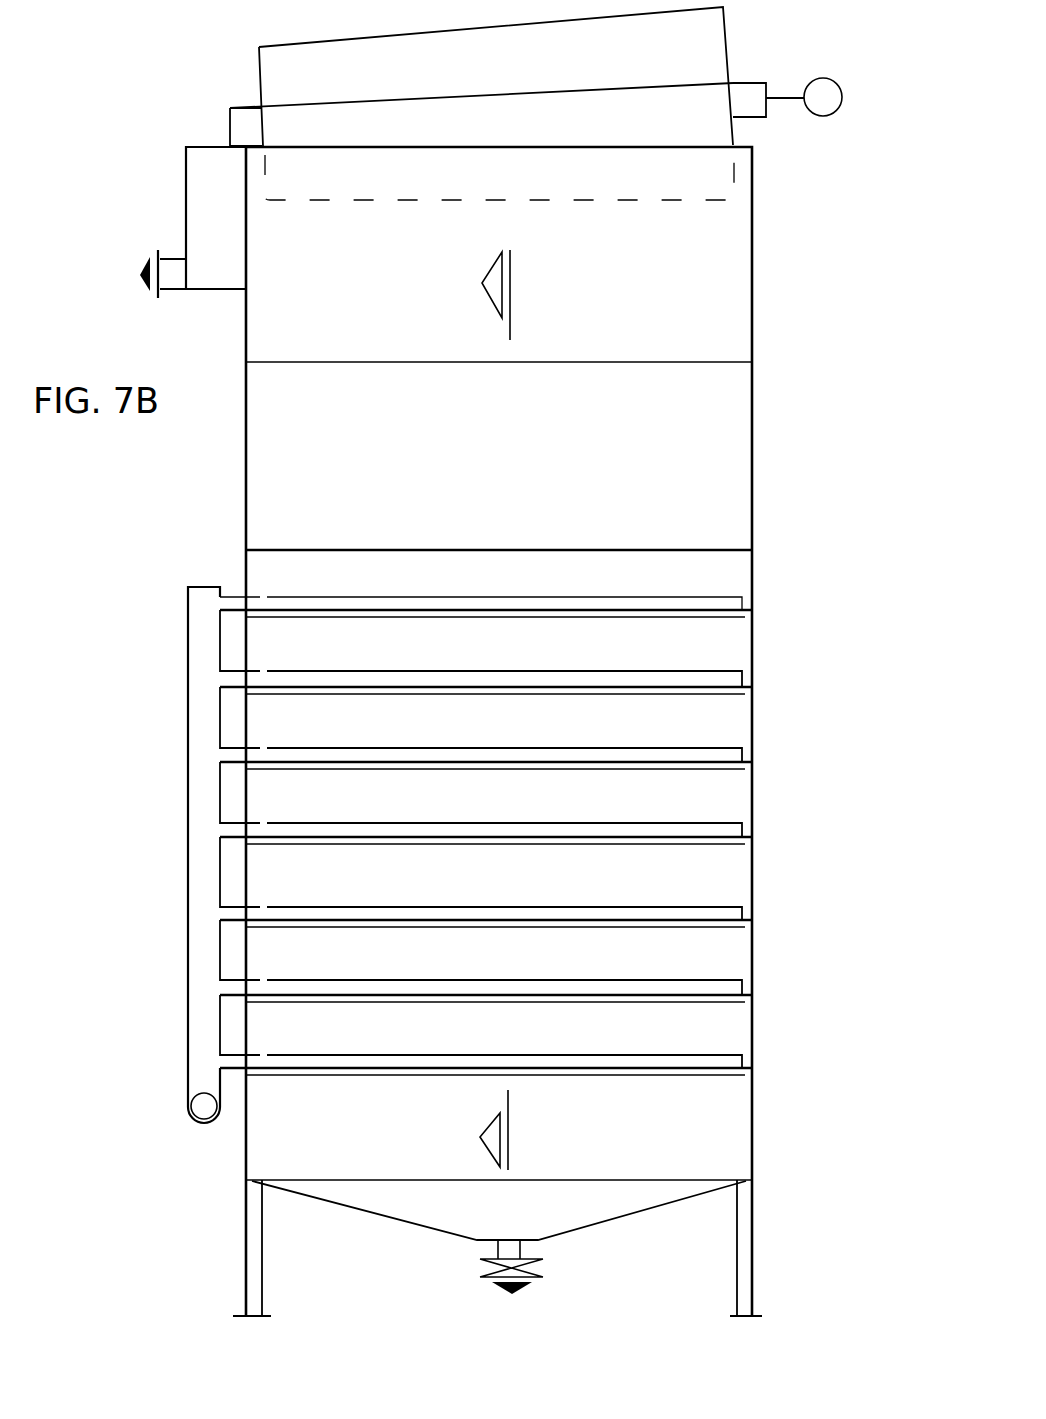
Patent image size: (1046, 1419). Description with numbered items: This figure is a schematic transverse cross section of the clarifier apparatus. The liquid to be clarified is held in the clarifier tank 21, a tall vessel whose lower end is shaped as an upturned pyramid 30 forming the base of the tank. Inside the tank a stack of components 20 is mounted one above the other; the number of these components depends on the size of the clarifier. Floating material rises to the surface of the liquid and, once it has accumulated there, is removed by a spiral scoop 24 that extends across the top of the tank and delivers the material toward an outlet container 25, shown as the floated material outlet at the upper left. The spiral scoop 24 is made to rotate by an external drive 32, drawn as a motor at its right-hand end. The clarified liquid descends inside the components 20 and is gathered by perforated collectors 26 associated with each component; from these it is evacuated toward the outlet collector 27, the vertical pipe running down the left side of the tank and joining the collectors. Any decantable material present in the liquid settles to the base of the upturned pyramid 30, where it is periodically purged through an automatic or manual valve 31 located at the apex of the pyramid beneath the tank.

The components 20 is at (737, 643).
The clarifier tank 21 is at (247, 449).
The spiral scoop 24 is at (716, 46).
The outlet container 25 is at (193, 203).
The perforated collectors 26 is at (247, 830).
The outlet collector 27 is at (188, 868).
The upturned pyramid 30 is at (605, 1213).
The valve 31 is at (544, 1267).
The external drive 32 is at (826, 116).